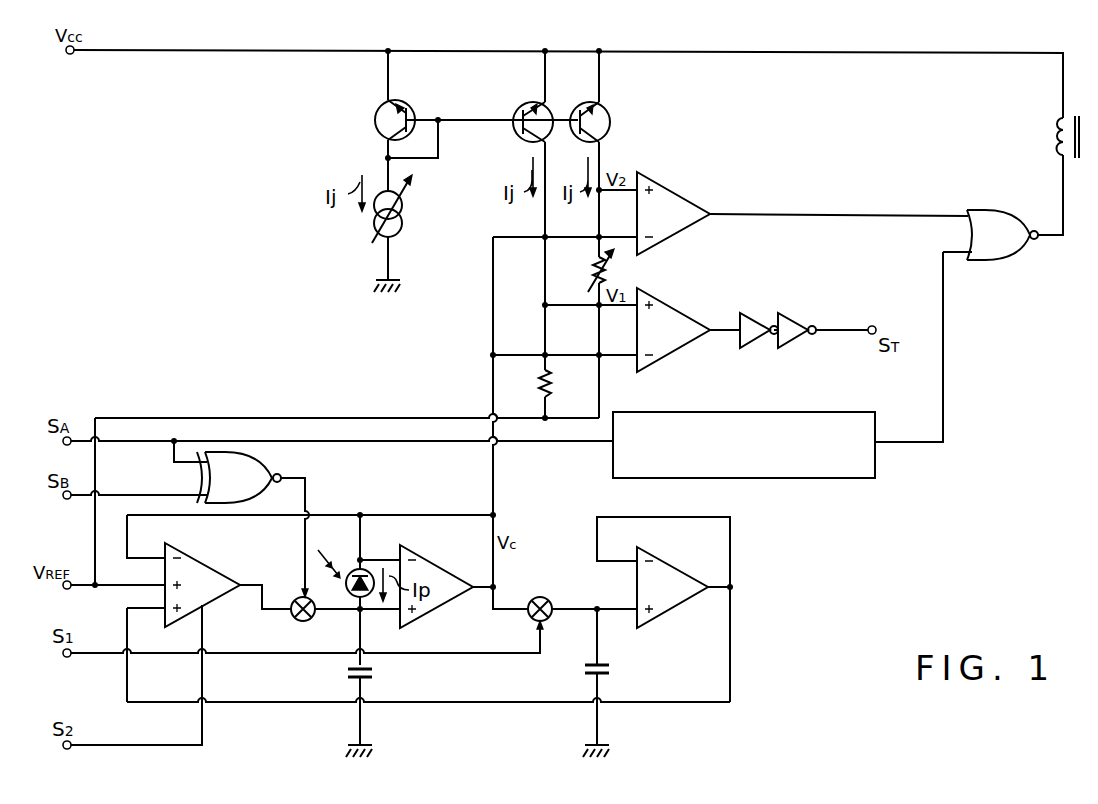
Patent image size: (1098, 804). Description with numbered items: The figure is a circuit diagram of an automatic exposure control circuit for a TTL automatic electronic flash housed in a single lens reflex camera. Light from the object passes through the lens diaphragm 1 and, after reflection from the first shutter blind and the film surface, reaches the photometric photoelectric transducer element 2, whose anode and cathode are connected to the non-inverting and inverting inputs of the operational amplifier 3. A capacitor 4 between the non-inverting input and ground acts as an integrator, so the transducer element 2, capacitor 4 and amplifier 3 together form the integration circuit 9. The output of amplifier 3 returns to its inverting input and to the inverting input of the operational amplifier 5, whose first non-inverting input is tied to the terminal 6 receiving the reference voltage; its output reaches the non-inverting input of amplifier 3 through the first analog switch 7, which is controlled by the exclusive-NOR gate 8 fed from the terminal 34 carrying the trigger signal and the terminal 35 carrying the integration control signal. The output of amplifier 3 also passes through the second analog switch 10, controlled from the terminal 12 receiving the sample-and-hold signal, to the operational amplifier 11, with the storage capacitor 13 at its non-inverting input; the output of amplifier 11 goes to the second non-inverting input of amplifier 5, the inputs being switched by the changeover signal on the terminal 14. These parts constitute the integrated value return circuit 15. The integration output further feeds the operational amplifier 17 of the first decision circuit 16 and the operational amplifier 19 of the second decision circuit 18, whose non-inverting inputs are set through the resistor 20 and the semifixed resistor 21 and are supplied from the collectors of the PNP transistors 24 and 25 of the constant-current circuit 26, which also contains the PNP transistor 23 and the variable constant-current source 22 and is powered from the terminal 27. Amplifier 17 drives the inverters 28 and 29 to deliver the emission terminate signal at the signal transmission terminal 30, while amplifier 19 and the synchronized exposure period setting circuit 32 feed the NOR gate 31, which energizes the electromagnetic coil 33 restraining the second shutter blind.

The lens diaphragm 1 is at (332, 566).
The photometric photoelectric transducer element 2 is at (362, 610).
The operational amplifier 3 is at (436, 574).
The capacitor 4 is at (369, 676).
The operational amplifier 5 is at (196, 570).
The terminal 6 is at (67, 589).
The first analog switch 7 is at (290, 624).
The exclusive-NOR gate 8 is at (256, 468).
The integration circuit 9 is at (444, 496).
The second analog switch 10 is at (539, 596).
The operational amplifier 11 is at (667, 578).
The terminal 12 is at (67, 657).
The capacitor 13 is at (608, 673).
The terminal 14 is at (67, 749).
The integrated value return circuit 15 is at (751, 652).
The first decision circuit 16 is at (732, 280).
The operational amplifier 17 is at (677, 318).
The second decision circuit 18 is at (721, 160).
The operational amplifier 19 is at (677, 202).
The resistor 20 is at (546, 387).
The semifixed resistor 21 is at (597, 263).
The variable constant-current source 22 is at (402, 226).
The PNP transistor 23 is at (377, 110).
The PNP transistor 24 is at (522, 109).
The PNP transistor 25 is at (610, 109).
The constant-current circuit 26 is at (450, 174).
The terminal 27 is at (71, 55).
The inverter 28 is at (748, 348).
The inverter 29 is at (790, 322).
The signal transmission terminal 30 is at (872, 326).
The NOR gate 31 is at (992, 212).
The synchronized exposure period setting circuit 32 is at (850, 416).
The electromagnetic coil 33 is at (1060, 140).
The terminal 34 is at (63, 445).
The terminal 35 is at (63, 499).